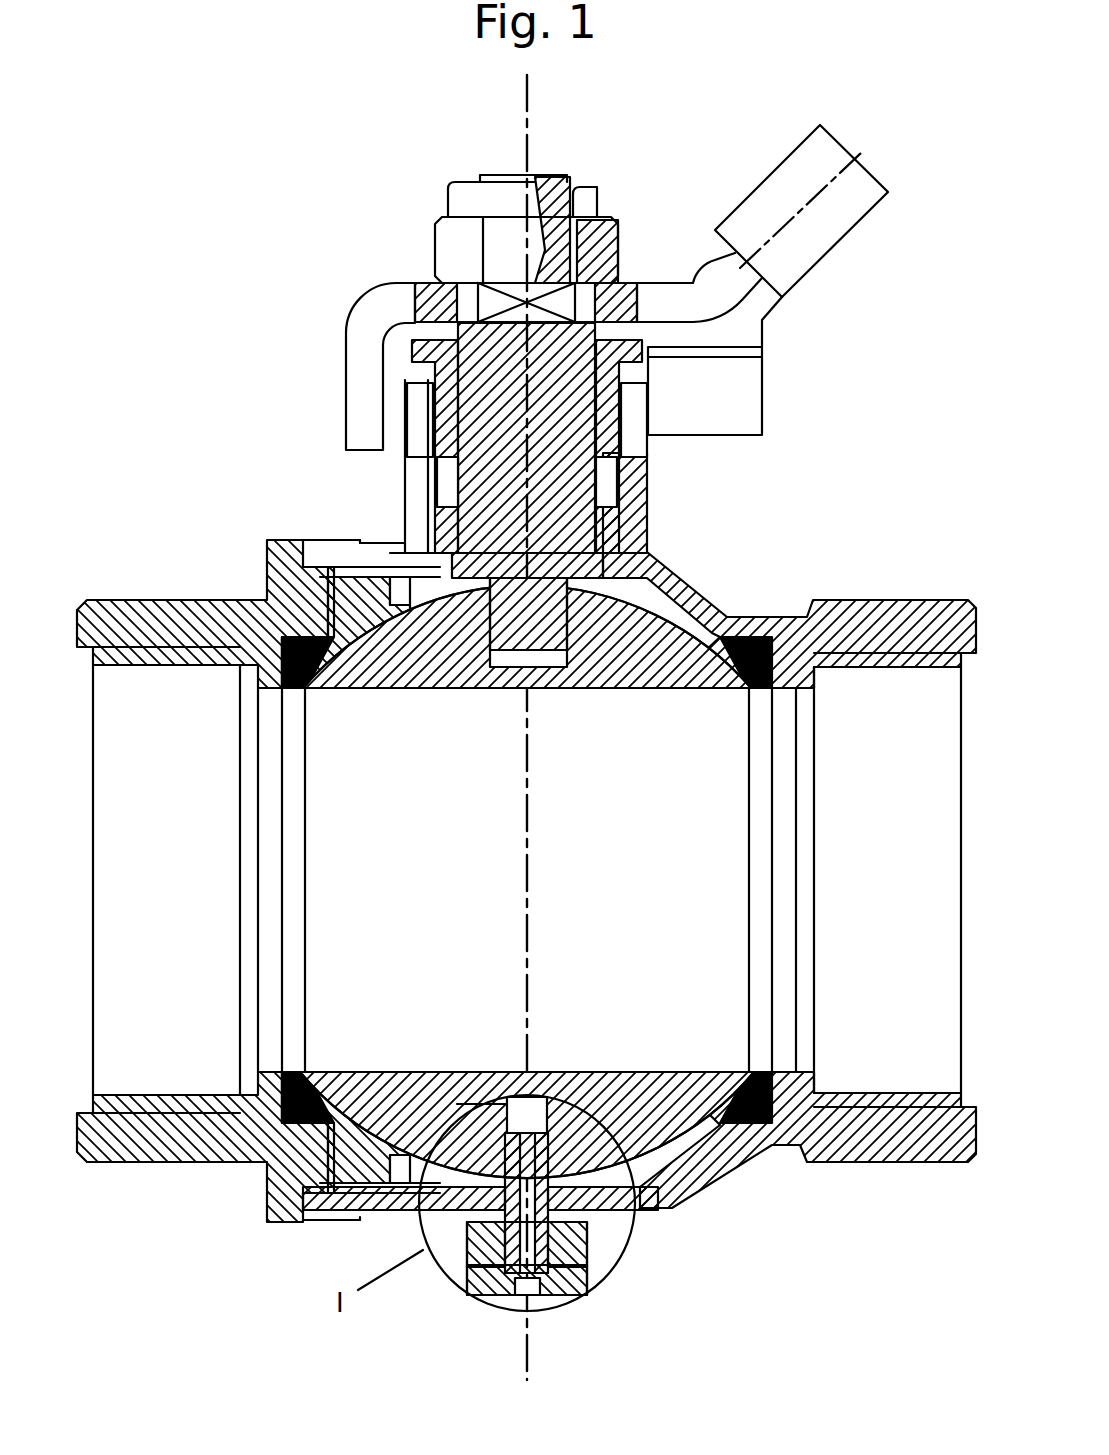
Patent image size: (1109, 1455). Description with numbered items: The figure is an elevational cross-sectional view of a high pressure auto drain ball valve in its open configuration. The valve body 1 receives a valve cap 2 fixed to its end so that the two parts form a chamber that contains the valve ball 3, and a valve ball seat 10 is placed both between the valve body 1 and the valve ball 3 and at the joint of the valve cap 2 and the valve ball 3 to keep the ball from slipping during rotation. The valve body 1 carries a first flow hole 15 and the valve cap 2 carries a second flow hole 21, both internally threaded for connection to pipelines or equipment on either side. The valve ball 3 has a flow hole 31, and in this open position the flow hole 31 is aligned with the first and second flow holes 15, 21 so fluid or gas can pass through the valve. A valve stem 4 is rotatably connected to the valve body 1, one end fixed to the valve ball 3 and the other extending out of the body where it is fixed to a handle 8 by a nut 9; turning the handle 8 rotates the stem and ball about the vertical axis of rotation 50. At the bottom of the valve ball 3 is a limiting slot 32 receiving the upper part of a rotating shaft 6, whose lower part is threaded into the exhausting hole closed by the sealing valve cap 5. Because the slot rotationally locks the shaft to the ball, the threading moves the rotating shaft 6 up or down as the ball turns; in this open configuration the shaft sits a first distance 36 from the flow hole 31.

The valve body 1 is at (727, 617).
The valve cap 2 is at (215, 625).
The valve ball 3 is at (626, 635).
The valve stem 4 is at (512, 477).
The sealing valve cap 5 is at (583, 1283).
The rotating shaft 6 is at (537, 1100).
The handle 8 is at (803, 215).
The nut 9 is at (543, 260).
The valve ball seat 10 is at (300, 660).
The first flow hole 15 is at (880, 742).
The second flow hole 21 is at (195, 740).
The flow hole 31 is at (407, 770).
The limiting slot 32 is at (655, 1175).
The first distance 36 is at (457, 1104).
The axis of rotation 50 is at (532, 905).